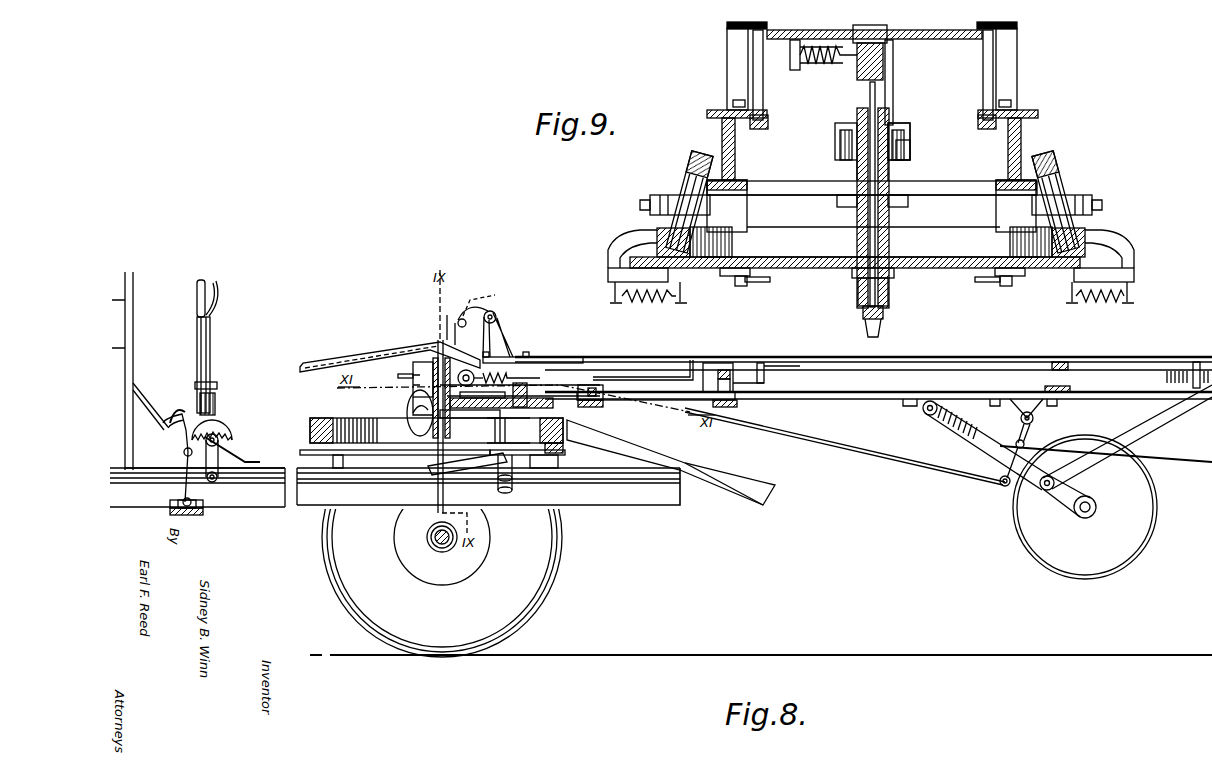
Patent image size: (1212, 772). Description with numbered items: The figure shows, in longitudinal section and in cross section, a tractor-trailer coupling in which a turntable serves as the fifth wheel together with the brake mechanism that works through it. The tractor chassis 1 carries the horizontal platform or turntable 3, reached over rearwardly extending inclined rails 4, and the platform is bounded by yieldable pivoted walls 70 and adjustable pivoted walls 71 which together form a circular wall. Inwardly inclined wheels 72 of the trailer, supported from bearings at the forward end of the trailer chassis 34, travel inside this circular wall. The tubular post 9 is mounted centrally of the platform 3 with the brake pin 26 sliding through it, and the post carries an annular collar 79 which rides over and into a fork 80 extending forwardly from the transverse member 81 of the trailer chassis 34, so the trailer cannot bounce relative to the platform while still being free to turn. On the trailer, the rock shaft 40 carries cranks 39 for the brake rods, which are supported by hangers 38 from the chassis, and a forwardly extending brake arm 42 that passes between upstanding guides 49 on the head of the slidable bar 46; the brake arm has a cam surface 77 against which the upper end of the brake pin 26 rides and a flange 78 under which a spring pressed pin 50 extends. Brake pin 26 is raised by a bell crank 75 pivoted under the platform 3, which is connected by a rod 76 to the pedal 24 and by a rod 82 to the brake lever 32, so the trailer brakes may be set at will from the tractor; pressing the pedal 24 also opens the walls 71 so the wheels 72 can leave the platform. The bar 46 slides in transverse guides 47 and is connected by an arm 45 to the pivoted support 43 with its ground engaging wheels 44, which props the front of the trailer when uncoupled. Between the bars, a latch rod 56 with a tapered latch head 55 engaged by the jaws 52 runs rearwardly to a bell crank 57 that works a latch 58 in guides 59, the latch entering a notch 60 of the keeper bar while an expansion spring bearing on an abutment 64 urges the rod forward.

In FIG. 8, the tractor chassis 1 is at (622, 496).
In FIG. 9, the platform or turntable 3 is at (830, 266).
In FIG. 8, the platform or turntable 3 is at (563, 438).
In FIG. 8, the inclined rails 4 is at (718, 470).
In FIG. 9, the tubular post 9 is at (888, 240).
In FIG. 8, the tubular post 9 is at (430, 432).
In FIG. 8, the pedal 24 is at (178, 457).
In FIG. 9, the brake pin 26 is at (878, 100).
In FIG. 8, the brake pin 26 is at (437, 356).
In FIG. 8, the brake lever 32 is at (198, 353).
In FIG. 8, the trailer chassis 34 is at (937, 358).
In FIG. 8, the hangers 38 is at (1033, 432).
In FIG. 8, the cranks 39 is at (510, 345).
In FIG. 9, the rock shaft 40 is at (937, 30).
In FIG. 8, the rock shaft 40 is at (493, 311).
In FIG. 8, the brake arm 42 is at (352, 353).
In FIG. 8, the pivoted support 43 is at (965, 440).
In FIG. 8, the ground engaging wheels 44 is at (1043, 568).
In FIG. 8, the arm 45 is at (1145, 430).
In FIG. 8, the bar or member 46 is at (1000, 375).
In FIG. 9, the transverse guides 47 is at (912, 151).
In FIG. 9, the upstanding guides 49 is at (893, 80).
In FIG. 8, the upstanding guides 49 is at (505, 332).
In FIG. 9, the spring pressed pin 50 is at (850, 88).
In FIG. 8, the spring pressed pin 50 is at (476, 308).
In FIG. 8, the jaws 52 is at (398, 377).
In FIG. 8, the latch head 55 is at (499, 385).
In FIG. 8, the latch rod 56 is at (663, 377).
In FIG. 8, the bell crank 57 is at (765, 374).
In FIG. 8, the latch 58 is at (725, 370).
In FIG. 8, the guides 59 is at (708, 363).
In FIG. 8, the notch 60 is at (600, 385).
In FIG. 8, the abutment 64 is at (535, 360).
In FIG. 8, the yieldable pivoted walls 70 is at (355, 419).
In FIG. 9, the adjustable pivoted walls 71 is at (871, 226).
In FIG. 8, the adjustable pivoted walls 71 is at (508, 430).
In FIG. 8, the inclined wheels 72 is at (420, 400).
In FIG. 9, the bell crank 75 is at (862, 322).
In FIG. 8, the bell crank 75 is at (514, 490).
In FIG. 8, the rod 76 is at (237, 505).
In FIG. 8, the cam surface 77 is at (456, 322).
In FIG. 9, the flange 78 is at (856, 30).
In FIG. 8, the flange 78 is at (448, 316).
In FIG. 9, the annular collar 79 is at (903, 176).
In FIG. 8, the annular collar 79 is at (415, 410).
In FIG. 8, the fork 80 is at (412, 425).
In FIG. 9, the transverse member 81 is at (797, 186).
In FIG. 8, the transverse member 81 is at (496, 418).
In FIG. 8, the rod 82 is at (395, 506).